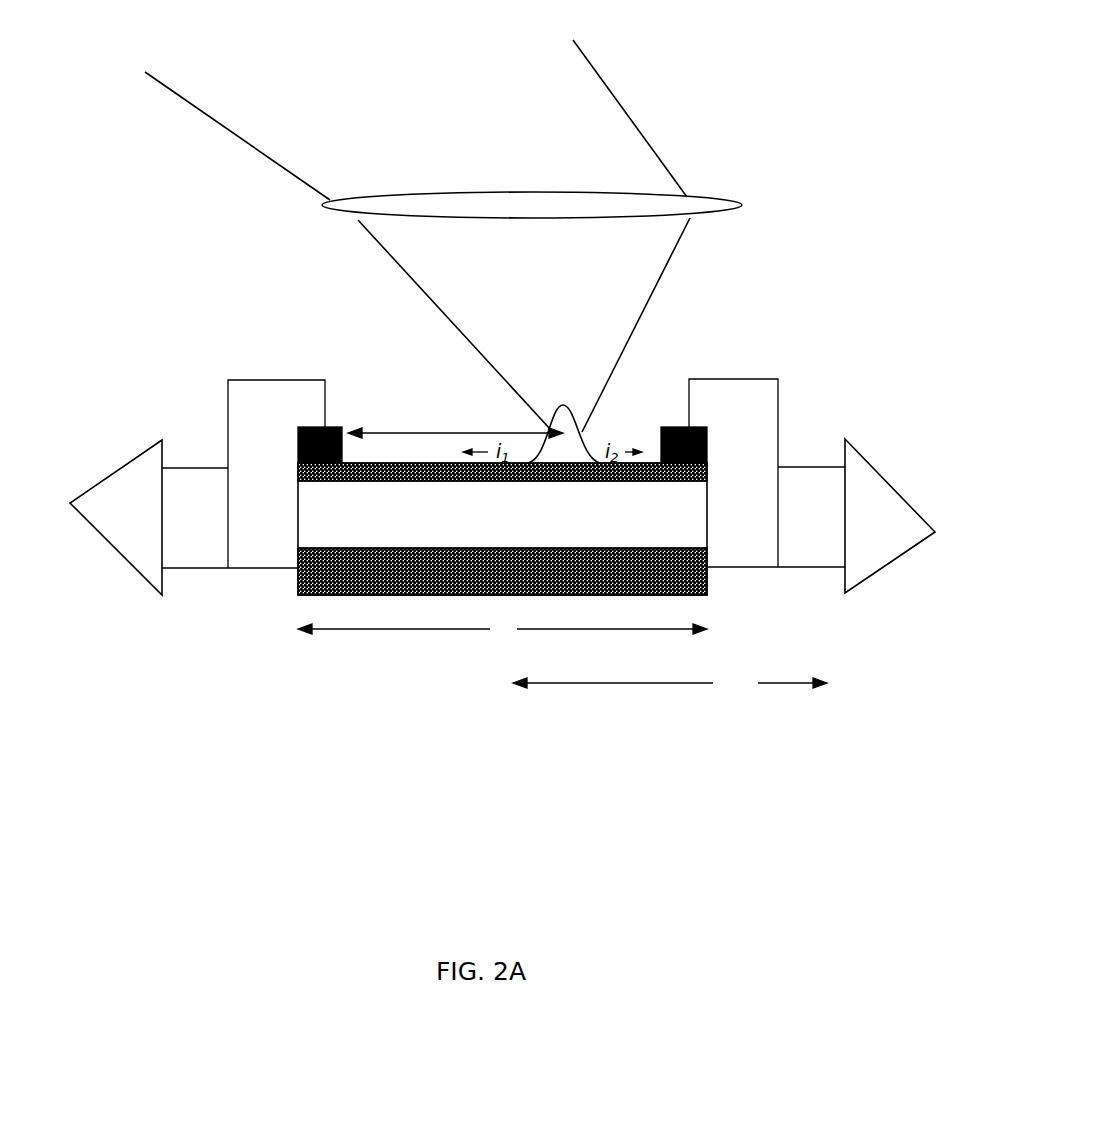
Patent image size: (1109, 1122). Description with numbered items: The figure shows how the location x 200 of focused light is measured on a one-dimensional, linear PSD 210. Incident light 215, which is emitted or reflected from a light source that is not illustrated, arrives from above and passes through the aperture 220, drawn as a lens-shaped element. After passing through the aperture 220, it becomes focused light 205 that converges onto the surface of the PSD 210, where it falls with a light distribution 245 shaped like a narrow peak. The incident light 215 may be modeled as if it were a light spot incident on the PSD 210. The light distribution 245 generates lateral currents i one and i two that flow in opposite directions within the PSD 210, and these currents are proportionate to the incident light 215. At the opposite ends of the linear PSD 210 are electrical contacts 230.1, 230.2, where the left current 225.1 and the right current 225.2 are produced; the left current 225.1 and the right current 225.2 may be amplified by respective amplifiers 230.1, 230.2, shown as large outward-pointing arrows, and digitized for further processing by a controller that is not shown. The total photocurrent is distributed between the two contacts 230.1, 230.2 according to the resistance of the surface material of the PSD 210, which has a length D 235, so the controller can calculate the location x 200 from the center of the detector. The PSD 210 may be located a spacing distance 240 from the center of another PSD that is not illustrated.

The location x 200 is at (441, 398).
The focused light 205 is at (524, 325).
The linear PSD 210 is at (502, 529).
The incident light 215 is at (416, 120).
The aperture 220 is at (707, 204).
The current I_L 225.1 is at (262, 425).
The current I_R 225.2 is at (743, 397).
The electrical contact 230.1 is at (308, 427).
The electrical contact 230.2 is at (690, 425).
The length D 235 is at (502, 647).
The distance S_D 240 is at (733, 698).
The light distribution 245 is at (565, 403).